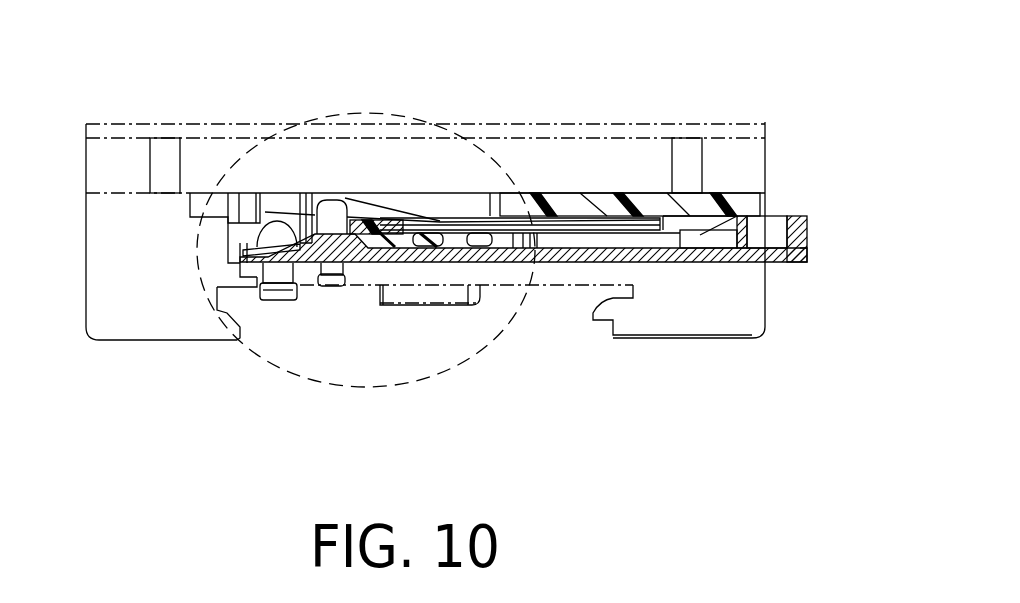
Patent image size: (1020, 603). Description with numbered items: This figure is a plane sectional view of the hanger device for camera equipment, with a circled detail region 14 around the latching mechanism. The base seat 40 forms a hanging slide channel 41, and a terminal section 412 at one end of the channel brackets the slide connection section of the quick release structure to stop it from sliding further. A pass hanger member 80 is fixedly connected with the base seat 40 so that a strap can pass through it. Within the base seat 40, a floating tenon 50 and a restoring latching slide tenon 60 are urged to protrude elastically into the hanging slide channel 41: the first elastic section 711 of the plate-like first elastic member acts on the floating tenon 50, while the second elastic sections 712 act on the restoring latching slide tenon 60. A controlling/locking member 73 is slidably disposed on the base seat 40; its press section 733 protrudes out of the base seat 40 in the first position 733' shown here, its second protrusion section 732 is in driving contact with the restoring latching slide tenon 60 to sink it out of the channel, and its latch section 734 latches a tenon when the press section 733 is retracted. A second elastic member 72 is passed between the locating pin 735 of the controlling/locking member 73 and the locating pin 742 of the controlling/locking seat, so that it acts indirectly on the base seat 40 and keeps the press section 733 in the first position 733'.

The detail region 14 is at (483, 353).
The base seat 40 is at (113, 336).
The hanging slide channel 41 is at (238, 343).
The terminal section 412 is at (400, 313).
The floating tenon 50 is at (268, 196).
The restoring latching slide tenon 60 is at (320, 196).
The second elastic member 72 is at (476, 235).
The controlling/locking member 73 is at (718, 262).
The pass hanger member 80 is at (173, 125).
The first elastic section 711 is at (298, 197).
The second elastic section 712 is at (363, 212).
The second protrusion section 732 is at (306, 190).
The press section 733 is at (743, 195).
The first position 733' is at (831, 303).
The latch section 734 is at (352, 196).
The locating pin 735 is at (504, 237).
The locating pin 742 is at (460, 236).